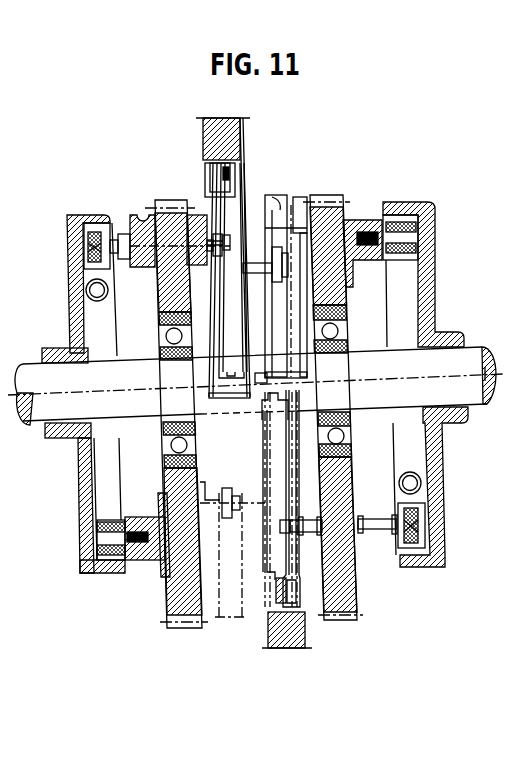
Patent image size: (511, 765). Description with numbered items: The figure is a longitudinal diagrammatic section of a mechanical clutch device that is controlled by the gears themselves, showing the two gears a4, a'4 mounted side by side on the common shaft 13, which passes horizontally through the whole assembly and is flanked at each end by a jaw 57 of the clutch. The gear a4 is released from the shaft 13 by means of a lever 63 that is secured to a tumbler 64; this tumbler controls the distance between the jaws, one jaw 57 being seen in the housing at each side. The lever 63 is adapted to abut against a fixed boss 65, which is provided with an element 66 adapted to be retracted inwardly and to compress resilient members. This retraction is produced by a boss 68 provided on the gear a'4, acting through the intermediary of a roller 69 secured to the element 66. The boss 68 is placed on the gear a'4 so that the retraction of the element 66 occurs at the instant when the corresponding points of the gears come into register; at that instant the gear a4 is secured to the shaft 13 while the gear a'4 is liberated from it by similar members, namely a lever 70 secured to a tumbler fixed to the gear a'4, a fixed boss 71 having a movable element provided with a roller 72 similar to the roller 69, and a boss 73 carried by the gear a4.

The shaft 13 is at (90, 378).
The jaw 57 is at (466, 459).
The lever 63 is at (212, 207).
The tumbler 64 is at (83, 239).
The fixed boss 65 is at (203, 140).
The element 66 is at (228, 213).
The boss 68 is at (233, 583).
The roller 69 is at (288, 257).
The lever 70 is at (297, 558).
The fixed boss 71 is at (282, 432).
The roller 72 is at (229, 492).
The boss 73 is at (282, 210).
The gear a'4 is at (168, 428).
The gear a4 is at (343, 593).